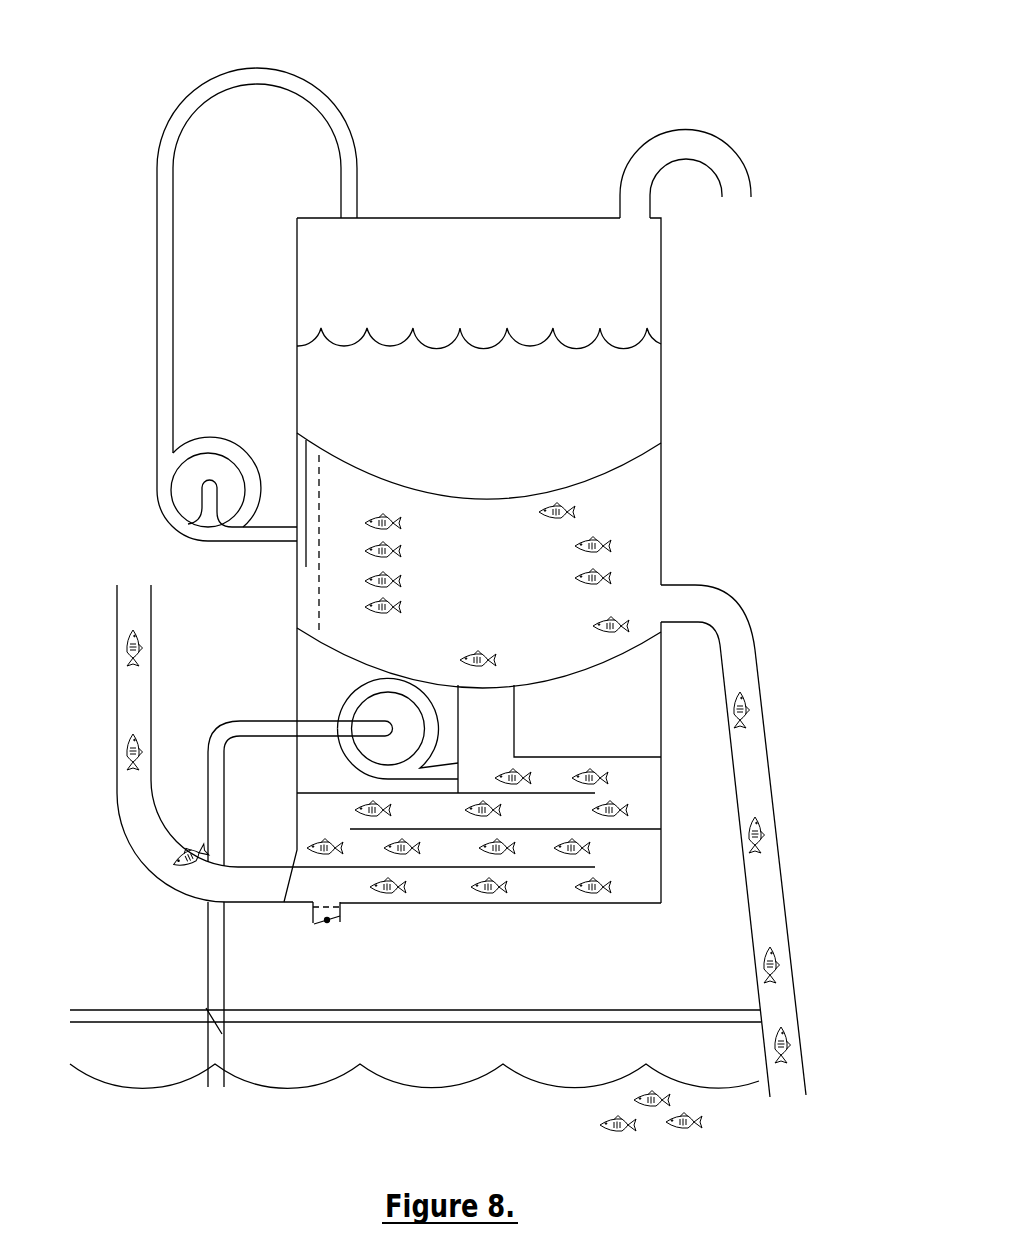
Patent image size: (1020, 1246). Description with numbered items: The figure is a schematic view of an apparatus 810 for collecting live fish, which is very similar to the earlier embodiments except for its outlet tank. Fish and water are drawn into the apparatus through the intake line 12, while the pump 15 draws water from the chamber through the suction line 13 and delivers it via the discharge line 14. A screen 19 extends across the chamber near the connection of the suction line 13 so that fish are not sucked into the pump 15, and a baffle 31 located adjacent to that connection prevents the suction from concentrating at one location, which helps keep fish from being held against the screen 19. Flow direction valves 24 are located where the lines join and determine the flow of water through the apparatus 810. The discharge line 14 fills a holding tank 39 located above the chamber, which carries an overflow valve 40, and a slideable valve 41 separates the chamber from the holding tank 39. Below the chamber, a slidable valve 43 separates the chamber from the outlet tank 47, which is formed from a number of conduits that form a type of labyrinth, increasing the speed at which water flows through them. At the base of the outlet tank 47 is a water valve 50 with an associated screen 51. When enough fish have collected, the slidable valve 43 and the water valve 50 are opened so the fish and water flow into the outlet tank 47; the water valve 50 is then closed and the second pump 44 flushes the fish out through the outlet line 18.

The apparatus 810 is at (735, 92).
The discharge line 14 is at (170, 130).
The overflow valve 40 is at (659, 152).
The holding tank 39 is at (590, 302).
The baffle 31 is at (297, 428).
The slideable valve 41 is at (517, 495).
The pump 15 is at (190, 477).
The suction line 13 is at (220, 527).
The screen 19 is at (627, 520).
The slidable valve 43 is at (493, 685).
The flow direction valve 24 is at (287, 532).
The second pump 44 is at (358, 693).
The intake line 12 is at (753, 773).
The outlet line 18 is at (132, 713).
The outlet tank 47 is at (632, 886).
The screen 51 is at (312, 912).
The water valve 50 is at (337, 923).